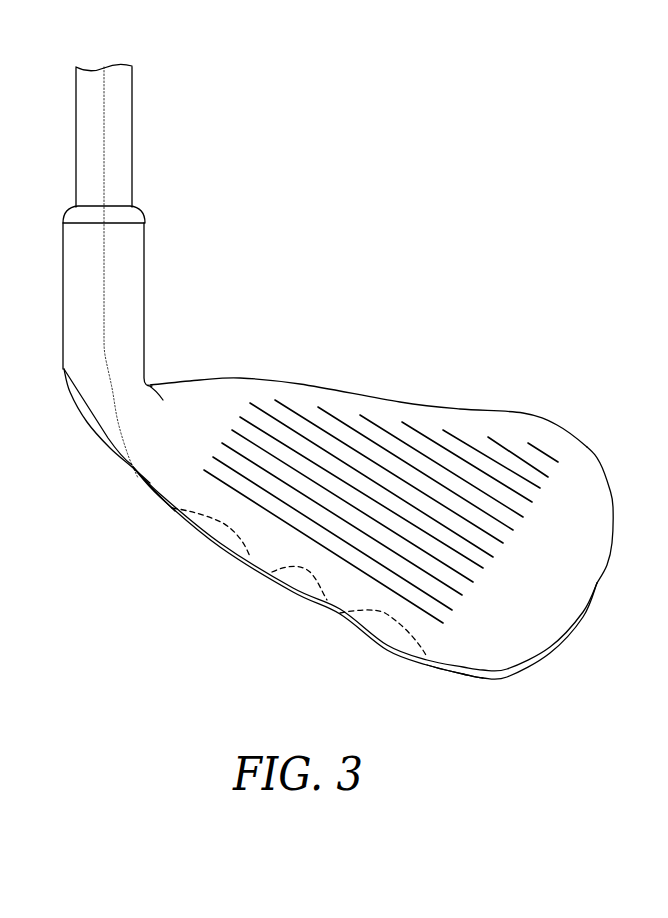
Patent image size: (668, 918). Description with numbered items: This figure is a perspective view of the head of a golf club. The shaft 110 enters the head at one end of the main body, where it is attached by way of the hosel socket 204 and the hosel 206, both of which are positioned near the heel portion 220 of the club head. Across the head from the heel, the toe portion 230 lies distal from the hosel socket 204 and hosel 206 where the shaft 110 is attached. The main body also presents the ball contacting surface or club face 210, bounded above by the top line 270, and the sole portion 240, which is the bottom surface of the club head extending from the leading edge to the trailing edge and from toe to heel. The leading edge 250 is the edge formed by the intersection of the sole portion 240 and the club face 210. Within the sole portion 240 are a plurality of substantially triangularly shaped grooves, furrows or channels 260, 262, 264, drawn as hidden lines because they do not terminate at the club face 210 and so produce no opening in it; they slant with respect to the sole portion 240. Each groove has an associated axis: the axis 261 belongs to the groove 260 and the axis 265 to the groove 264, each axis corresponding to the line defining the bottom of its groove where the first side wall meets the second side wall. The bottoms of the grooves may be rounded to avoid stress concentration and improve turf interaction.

The shaft 110 is at (133, 108).
The hosel 206 is at (138, 209).
The hosel socket 204 is at (126, 295).
The heel portion 220 is at (98, 429).
The top line 270 is at (460, 406).
The toe portion 230 is at (598, 578).
The club face 210 is at (285, 500).
The sole portion 240 is at (280, 590).
The leading edge 250 is at (253, 570).
The axis 265 is at (178, 511).
The groove 264 is at (218, 540).
The groove 262 is at (299, 594).
The groove 260 is at (385, 636).
The axis 261 is at (427, 660).